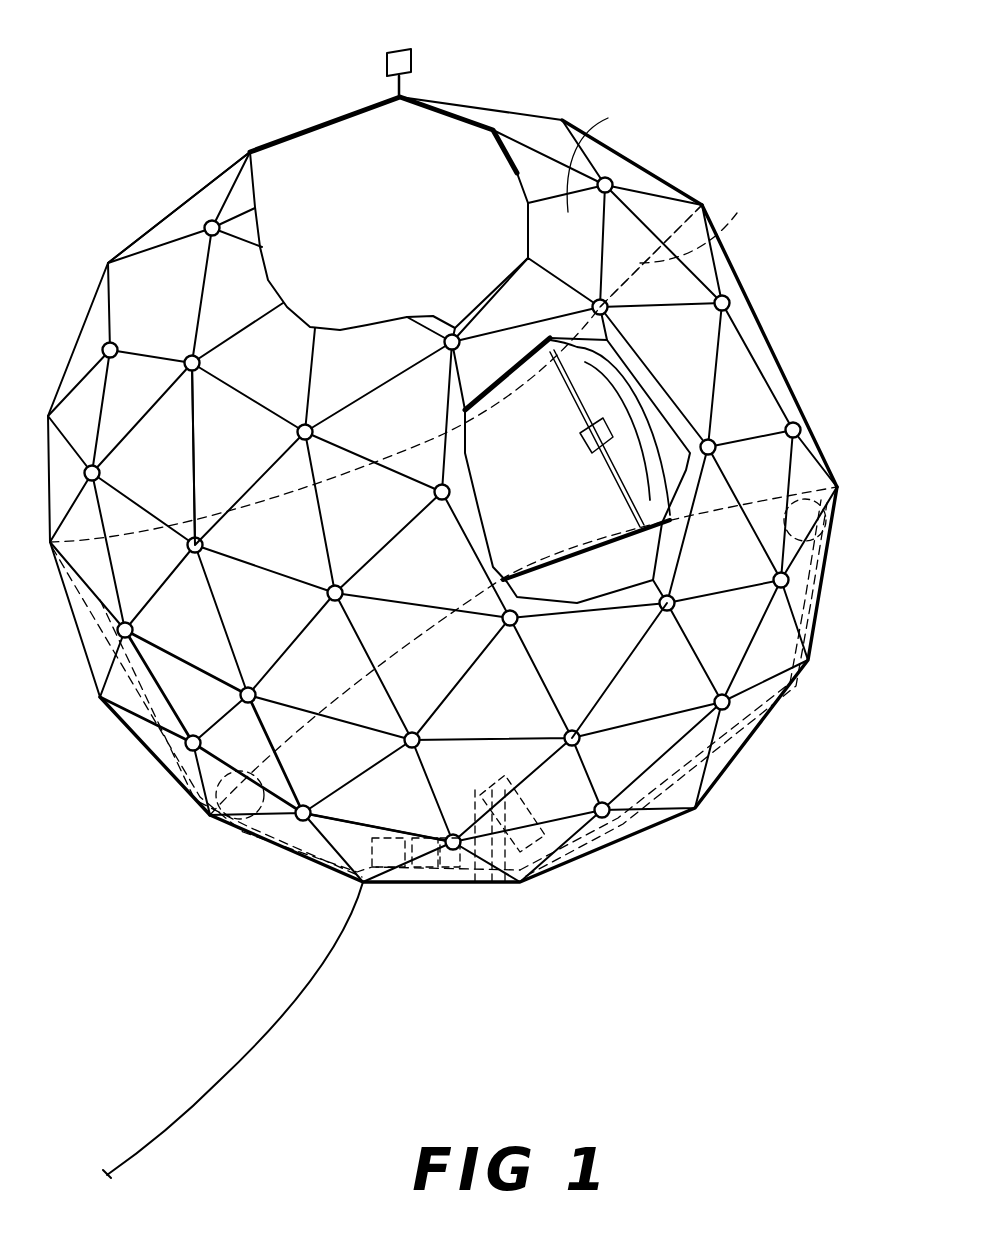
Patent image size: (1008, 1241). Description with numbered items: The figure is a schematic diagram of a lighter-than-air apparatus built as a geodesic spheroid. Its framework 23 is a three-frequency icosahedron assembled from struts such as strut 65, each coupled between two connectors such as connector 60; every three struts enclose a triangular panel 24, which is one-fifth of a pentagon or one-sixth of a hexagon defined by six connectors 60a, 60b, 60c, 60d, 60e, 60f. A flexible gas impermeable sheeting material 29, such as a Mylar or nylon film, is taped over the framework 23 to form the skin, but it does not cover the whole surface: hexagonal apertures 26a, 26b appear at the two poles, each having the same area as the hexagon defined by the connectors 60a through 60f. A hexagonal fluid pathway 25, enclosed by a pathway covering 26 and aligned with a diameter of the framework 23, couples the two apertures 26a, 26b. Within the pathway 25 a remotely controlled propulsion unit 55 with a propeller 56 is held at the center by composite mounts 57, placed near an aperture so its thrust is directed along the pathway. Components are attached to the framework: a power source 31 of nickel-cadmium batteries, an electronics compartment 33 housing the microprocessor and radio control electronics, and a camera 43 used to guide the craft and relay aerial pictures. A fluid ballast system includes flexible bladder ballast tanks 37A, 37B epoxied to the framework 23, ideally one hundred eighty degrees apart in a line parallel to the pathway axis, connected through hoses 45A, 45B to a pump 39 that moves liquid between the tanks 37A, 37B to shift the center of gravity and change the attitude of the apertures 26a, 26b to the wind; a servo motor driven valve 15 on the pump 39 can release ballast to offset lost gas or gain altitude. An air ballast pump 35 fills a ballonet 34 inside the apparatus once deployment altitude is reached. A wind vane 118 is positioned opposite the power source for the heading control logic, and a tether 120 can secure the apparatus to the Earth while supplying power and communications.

The wind vane 118 is at (398, 49).
The ballonet 34 is at (332, 142).
The geodesic framework 23 is at (178, 210).
The gas impermeable sheeting material 29 is at (606, 154).
The connector 60 is at (611, 180).
The fluid pathway 25 is at (685, 247).
The hexagonal aperture 26a is at (738, 305).
The fluid pathway covering 26 is at (536, 453).
The propeller 56 is at (653, 457).
The mounts 57 is at (612, 492).
The propulsion unit 55 is at (590, 450).
The panel 24 is at (219, 461).
The connector 60a is at (201, 362).
The connector 60b is at (314, 432).
The connector 60c is at (337, 585).
The connector 60d is at (249, 687).
The connector 60e is at (133, 630).
The connector 60f is at (100, 473).
The strut 65 is at (630, 656).
The ballast tank 37A is at (815, 527).
The ballast tank 37B is at (245, 832).
The hose 45A is at (753, 727).
The hose 45B is at (320, 858).
The hexagonal aperture 26b is at (157, 750).
The air ballast pump 35 is at (390, 850).
The electronics compartment 33 is at (428, 840).
The pump 39 is at (495, 830).
The servo motor driven valve 15 is at (483, 886).
The power source 31 is at (497, 890).
The camera 43 is at (546, 856).
The tether 120 is at (221, 1078).